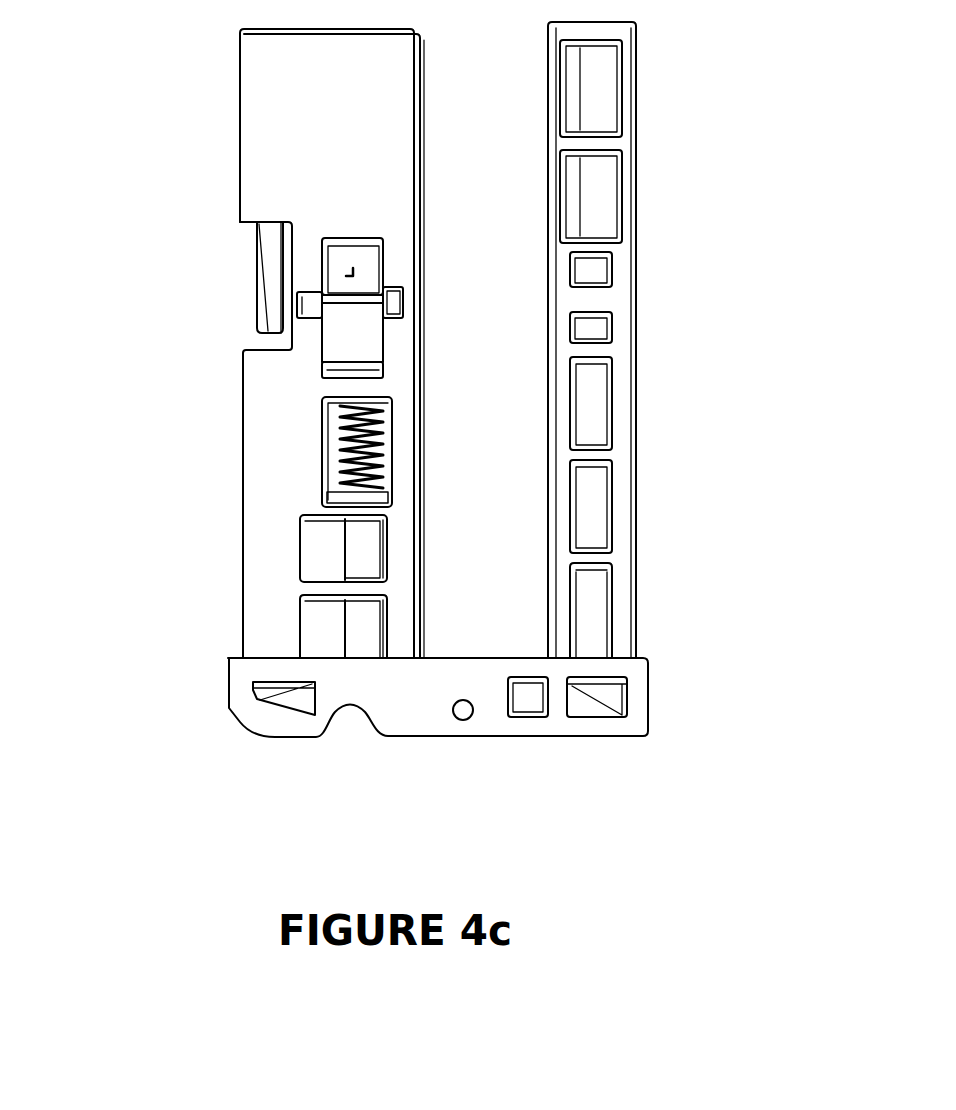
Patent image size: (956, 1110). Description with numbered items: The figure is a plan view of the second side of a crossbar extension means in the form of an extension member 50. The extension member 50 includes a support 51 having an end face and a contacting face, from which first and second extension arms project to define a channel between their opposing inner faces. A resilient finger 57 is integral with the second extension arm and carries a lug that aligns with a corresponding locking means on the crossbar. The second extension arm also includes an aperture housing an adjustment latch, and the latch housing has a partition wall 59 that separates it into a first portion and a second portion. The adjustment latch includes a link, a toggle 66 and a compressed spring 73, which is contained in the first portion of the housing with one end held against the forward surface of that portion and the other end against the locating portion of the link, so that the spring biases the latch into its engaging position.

The extension member 50 is at (660, 625).
The support 51 is at (228, 682).
The resilient finger 57 is at (257, 272).
The partition wall 59 is at (343, 390).
The toggle 66 is at (333, 330).
The compressed spring 73 is at (340, 460).